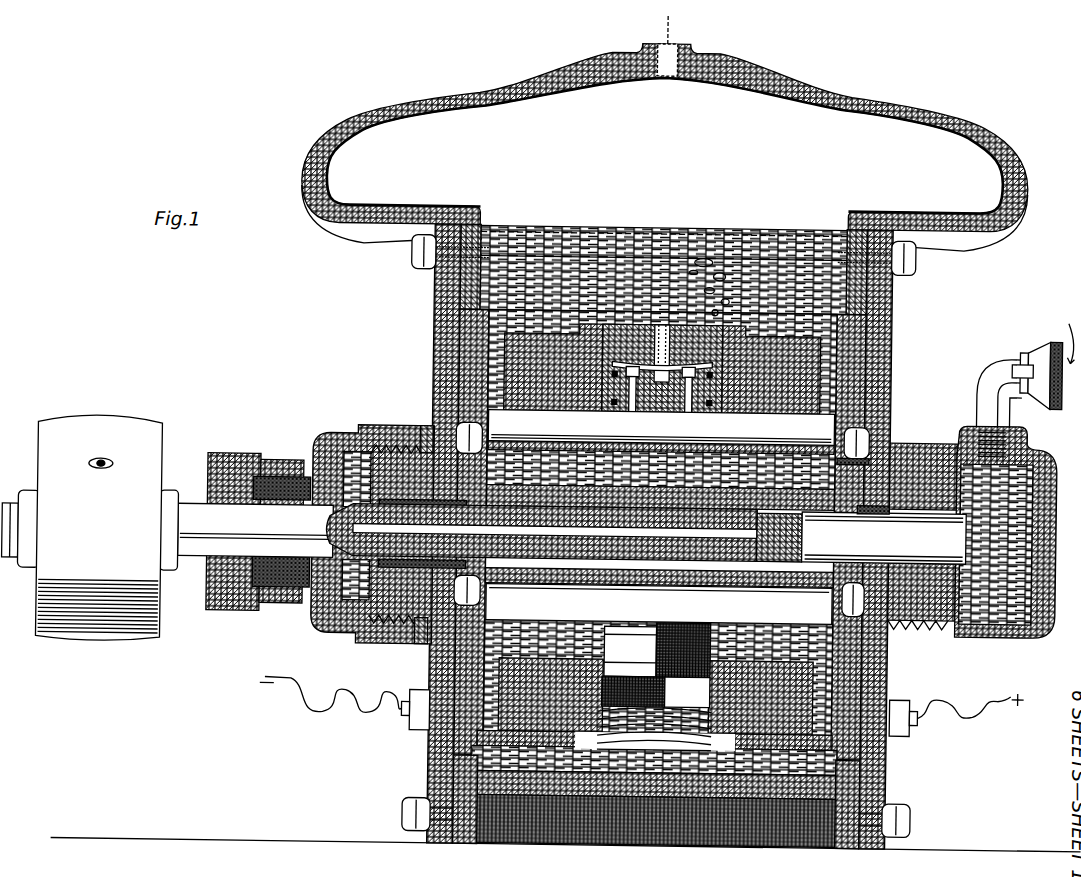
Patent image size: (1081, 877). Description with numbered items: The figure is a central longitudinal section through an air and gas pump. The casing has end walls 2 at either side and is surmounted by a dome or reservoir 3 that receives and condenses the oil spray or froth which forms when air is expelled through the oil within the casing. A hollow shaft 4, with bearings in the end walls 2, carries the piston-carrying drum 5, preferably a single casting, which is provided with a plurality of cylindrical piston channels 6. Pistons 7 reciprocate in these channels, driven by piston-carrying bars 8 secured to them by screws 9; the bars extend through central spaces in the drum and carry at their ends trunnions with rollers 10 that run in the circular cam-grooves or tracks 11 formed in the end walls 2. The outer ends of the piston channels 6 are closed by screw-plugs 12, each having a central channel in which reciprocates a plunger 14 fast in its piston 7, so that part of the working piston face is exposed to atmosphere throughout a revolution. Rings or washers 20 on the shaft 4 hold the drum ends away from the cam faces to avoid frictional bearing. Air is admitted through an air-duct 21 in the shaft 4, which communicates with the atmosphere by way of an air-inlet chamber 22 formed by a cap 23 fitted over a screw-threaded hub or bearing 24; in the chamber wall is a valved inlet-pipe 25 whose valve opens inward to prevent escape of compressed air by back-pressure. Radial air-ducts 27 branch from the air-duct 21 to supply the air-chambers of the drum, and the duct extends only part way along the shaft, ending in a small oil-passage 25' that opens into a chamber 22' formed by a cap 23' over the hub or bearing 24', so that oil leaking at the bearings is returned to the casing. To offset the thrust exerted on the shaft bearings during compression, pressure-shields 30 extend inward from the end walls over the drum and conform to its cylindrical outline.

The end walls 2 is at (407, 343).
The dome or reservoir 3 is at (352, 134).
The hollow shaft 4 is at (884, 538).
The piston-carrying drum 5 is at (834, 374).
The piston channels 6 is at (656, 686).
The pistons 7 is at (630, 651).
The piston-carrying bars 8 is at (661, 428).
The screws 9 is at (690, 365).
The rollers 10 is at (861, 427).
The cam-grooves or tracks 11 is at (865, 456).
The screw-plugs 12 is at (644, 325).
The plunger 14 is at (623, 325).
The rings or washers 20 is at (493, 562).
The air-duct 21 is at (802, 538).
The air-inlet chamber 22 is at (996, 528).
The chamber 22' is at (322, 512).
The cap 23 is at (1005, 549).
The cap 23' is at (336, 515).
The screw-threaded hub or bearing 24 is at (917, 639).
The hub or bearing 24' is at (393, 637).
The valved inlet-pipe 25 is at (1025, 375).
The oil-passage 25' is at (554, 573).
The radial air-ducts 27 is at (773, 548).
The pressure-shields 30 is at (457, 770).